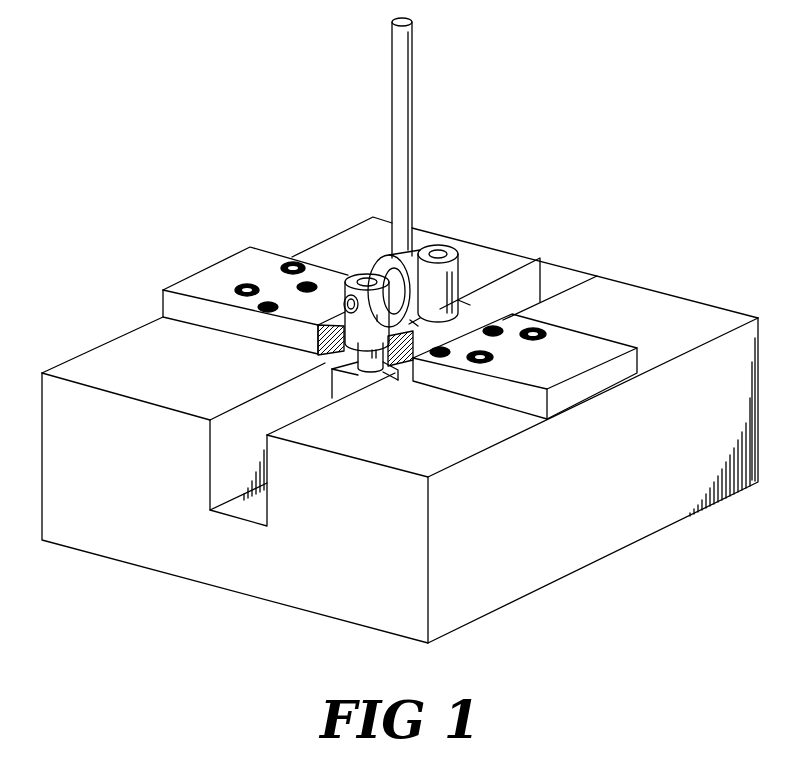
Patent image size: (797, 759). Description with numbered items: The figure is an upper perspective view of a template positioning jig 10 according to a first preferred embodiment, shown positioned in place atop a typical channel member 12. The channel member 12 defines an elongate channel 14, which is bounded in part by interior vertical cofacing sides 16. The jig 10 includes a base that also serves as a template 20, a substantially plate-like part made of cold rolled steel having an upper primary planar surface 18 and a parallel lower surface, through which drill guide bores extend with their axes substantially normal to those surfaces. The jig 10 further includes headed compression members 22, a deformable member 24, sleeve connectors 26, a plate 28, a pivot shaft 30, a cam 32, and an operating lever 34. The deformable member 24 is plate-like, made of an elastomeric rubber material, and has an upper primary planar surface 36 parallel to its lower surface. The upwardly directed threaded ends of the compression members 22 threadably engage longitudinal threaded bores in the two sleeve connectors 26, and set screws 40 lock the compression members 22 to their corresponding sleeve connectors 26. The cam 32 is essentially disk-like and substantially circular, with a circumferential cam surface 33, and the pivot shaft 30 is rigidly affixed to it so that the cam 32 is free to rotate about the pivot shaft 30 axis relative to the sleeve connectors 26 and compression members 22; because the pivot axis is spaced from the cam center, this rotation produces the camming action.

The template positioning jig 10 is at (208, 106).
The channel member 12 is at (98, 334).
The elongate channel 14 is at (255, 433).
The interior vertical cofacing sides 16 is at (227, 473).
The upper primary planar surface 18 is at (525, 361).
The template 20 is at (242, 290).
The headed compression members 22 is at (333, 380).
The deformable member 24 is at (360, 380).
The sleeve connectors 26 is at (318, 323).
The plate 28 is at (338, 395).
The pivot shaft 30 is at (352, 298).
The cam 32 is at (460, 280).
The circumferential cam surface 33 is at (470, 312).
The operating lever 34 is at (413, 55).
The upper primary planar surface of deformable member 36 is at (393, 376).
The set screws 40 is at (414, 325).